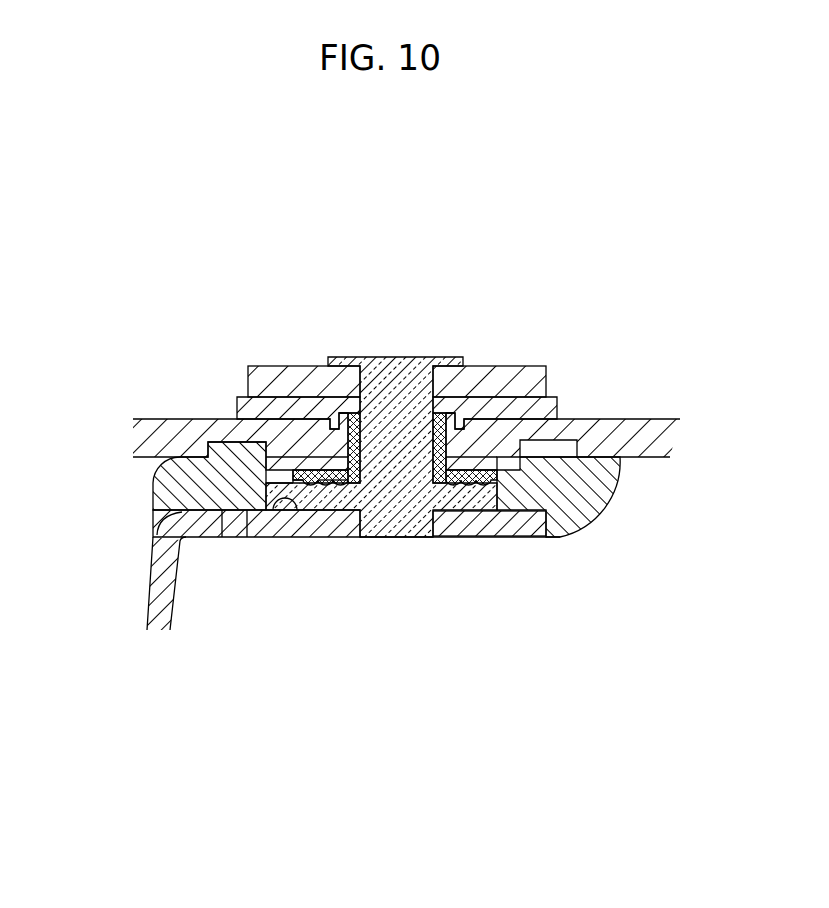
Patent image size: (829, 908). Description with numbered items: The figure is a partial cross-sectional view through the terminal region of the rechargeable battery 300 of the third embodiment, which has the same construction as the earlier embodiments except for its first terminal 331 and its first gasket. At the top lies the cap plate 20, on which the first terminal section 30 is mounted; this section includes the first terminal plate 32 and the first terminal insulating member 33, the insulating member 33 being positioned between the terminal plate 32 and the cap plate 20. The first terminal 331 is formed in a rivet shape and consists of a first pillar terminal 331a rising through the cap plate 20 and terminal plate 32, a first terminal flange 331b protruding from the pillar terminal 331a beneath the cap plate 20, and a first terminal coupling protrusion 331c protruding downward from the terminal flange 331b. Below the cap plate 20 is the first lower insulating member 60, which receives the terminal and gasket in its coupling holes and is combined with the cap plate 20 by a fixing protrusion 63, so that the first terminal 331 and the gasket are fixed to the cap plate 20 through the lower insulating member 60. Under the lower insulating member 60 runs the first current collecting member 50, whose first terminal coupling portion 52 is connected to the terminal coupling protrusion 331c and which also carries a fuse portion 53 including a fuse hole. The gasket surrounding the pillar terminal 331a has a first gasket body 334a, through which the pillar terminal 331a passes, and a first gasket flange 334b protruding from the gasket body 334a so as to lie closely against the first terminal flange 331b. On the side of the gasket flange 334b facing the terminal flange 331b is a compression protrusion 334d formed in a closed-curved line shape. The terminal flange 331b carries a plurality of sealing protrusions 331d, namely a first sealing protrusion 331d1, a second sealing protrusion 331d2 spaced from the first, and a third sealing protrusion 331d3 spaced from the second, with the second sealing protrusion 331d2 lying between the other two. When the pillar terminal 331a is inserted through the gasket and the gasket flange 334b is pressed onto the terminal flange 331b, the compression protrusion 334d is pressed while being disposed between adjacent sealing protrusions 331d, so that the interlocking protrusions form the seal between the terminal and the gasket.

The rechargeable battery 300 is at (379, 162).
The cap plate 20 is at (655, 412).
The first terminal section 30 is at (577, 304).
The first terminal plate 32 is at (518, 377).
The first terminal insulating member 33 is at (547, 407).
The first current collecting member 50 is at (136, 600).
The first terminal coupling portion 52 is at (207, 524).
The fuse portion 53 is at (237, 527).
The first lower insulating member 60 is at (593, 530).
The fixing protrusion 63 is at (277, 514).
The first terminal 331 is at (686, 747).
The first pillar terminal 331a is at (400, 442).
The first terminal flange 331b is at (481, 505).
The first terminal coupling protrusion 331c is at (386, 522).
The sealing protrusions 331d is at (237, 273).
The first sealing protrusion 331d1 is at (350, 485).
The second sealing protrusion 331d2 is at (327, 485).
The third sealing protrusion 331d3 is at (301, 485).
The first gasket body 334a is at (363, 435).
The first gasket flange 334b is at (300, 472).
The compression protrusion 334d is at (316, 475).